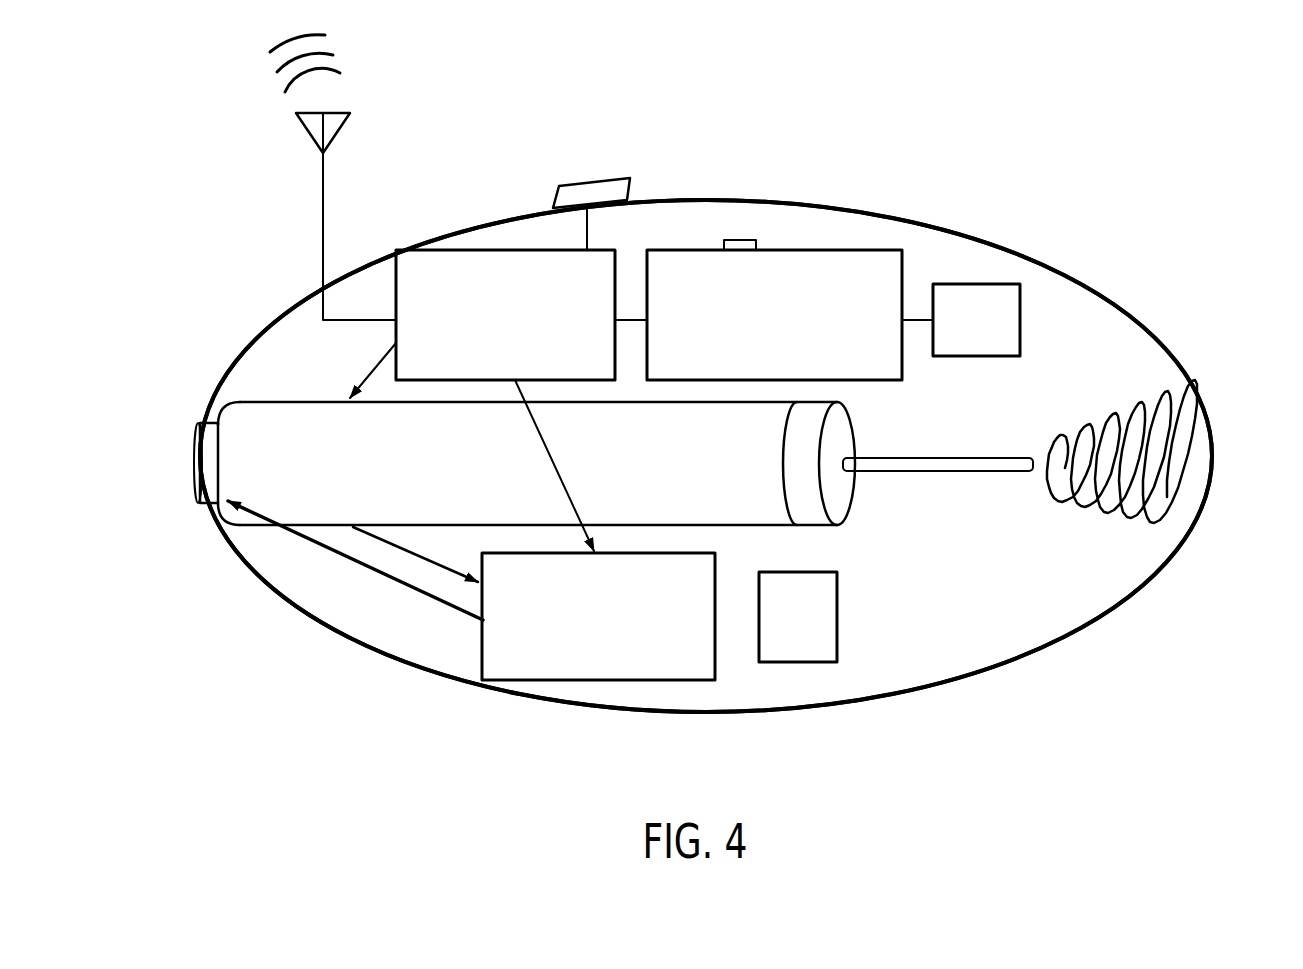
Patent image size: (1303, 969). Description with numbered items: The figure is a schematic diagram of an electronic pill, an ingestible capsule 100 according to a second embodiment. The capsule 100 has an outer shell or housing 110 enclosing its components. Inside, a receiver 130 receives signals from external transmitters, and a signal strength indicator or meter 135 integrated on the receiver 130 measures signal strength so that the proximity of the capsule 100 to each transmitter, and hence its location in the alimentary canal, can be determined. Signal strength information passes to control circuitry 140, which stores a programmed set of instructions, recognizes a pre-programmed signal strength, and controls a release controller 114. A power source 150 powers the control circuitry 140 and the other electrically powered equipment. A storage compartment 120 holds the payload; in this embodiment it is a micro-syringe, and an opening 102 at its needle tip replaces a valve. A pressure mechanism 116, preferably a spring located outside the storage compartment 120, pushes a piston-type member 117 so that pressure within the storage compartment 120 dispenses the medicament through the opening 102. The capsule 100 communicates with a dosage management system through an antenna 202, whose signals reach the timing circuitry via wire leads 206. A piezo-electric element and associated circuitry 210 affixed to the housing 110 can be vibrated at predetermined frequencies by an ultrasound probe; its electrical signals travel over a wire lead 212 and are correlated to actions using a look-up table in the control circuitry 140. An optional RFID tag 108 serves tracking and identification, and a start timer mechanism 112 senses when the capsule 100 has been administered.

The capsule 100 is at (1067, 190).
The opening 102 is at (199, 424).
The RFID tag 108 is at (438, 571).
The housing 110 is at (899, 207).
The start timer mechanism 112 is at (368, 571).
The release controller 114 is at (532, 511).
The pressure mechanism 116 is at (1172, 520).
The piston-type member 117 is at (854, 510).
The storage compartment 120 is at (527, 463).
The receiver 130 is at (790, 315).
The signal strength indicator or meter 135 is at (747, 240).
The control circuitry 140 is at (521, 315).
The power source 150 is at (976, 320).
The antenna 202 is at (353, 114).
The wire leads 206 is at (321, 215).
The piezo-electric element and associated circuitry 210 is at (577, 181).
The wire lead 212 is at (591, 228).